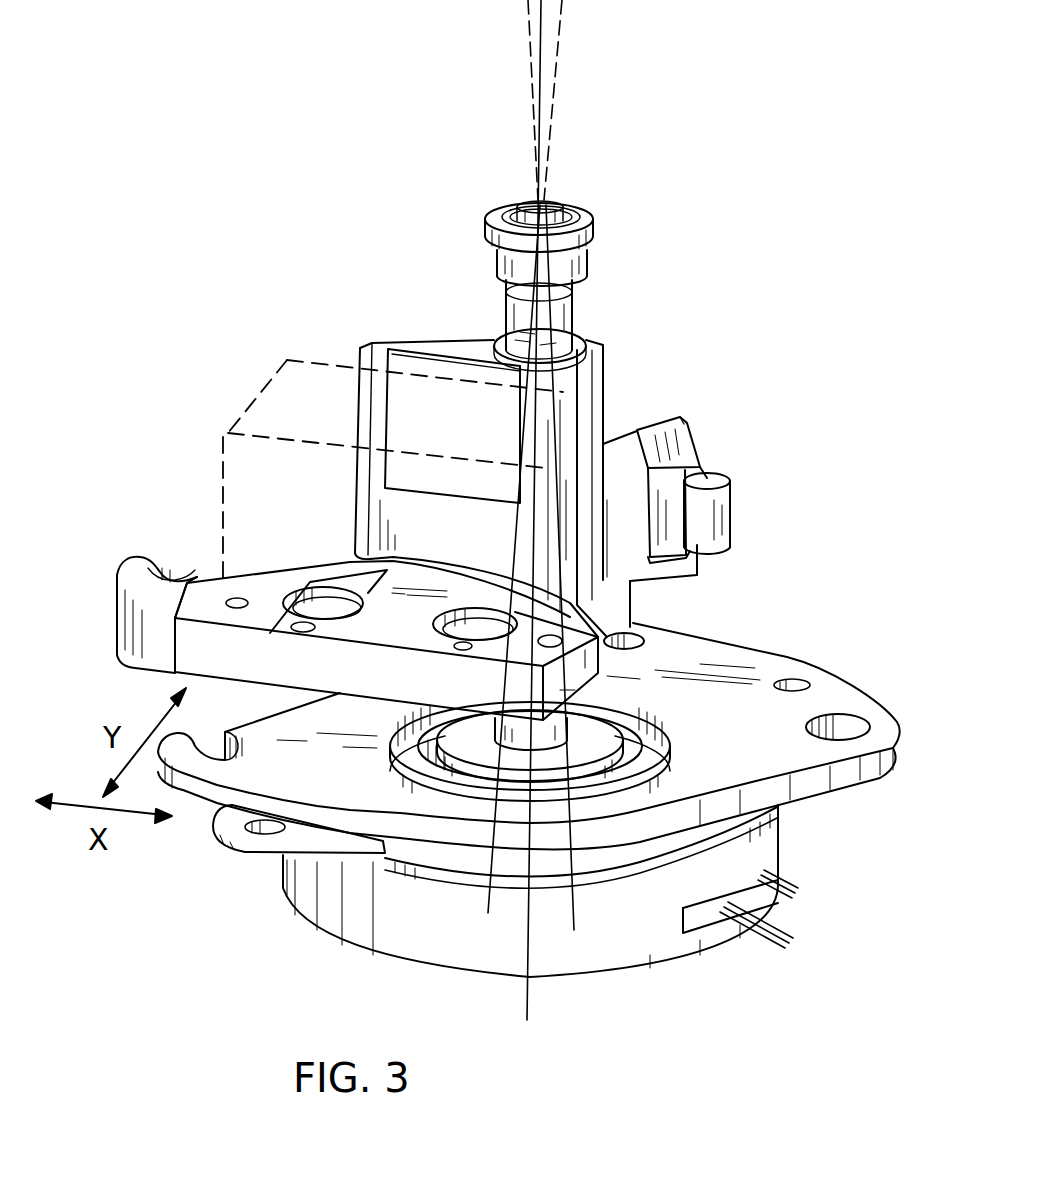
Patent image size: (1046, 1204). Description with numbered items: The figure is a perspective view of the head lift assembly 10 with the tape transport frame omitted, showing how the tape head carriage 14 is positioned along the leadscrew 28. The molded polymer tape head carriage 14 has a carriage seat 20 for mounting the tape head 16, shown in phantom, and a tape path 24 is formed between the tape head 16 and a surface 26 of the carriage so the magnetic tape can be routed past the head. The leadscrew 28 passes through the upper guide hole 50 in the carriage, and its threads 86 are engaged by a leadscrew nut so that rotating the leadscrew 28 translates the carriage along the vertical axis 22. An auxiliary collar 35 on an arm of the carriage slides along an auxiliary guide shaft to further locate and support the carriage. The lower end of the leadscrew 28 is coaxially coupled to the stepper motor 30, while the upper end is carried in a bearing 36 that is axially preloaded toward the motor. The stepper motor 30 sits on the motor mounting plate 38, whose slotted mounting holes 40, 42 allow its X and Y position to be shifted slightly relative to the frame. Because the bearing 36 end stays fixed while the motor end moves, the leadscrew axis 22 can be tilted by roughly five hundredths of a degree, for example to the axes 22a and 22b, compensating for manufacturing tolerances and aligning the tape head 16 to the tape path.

The head lift assembly 10 is at (212, 888).
The tape head carriage 14 is at (617, 478).
The tape head 16 is at (245, 405).
The carriage seat 20 is at (407, 627).
The vertical axis 22 is at (527, 1010).
The tilted axis 22a is at (488, 900).
The tilted axis 22b is at (574, 907).
The tape path 24 is at (390, 385).
The surface of the tape head carriage 26 is at (517, 382).
The leadscrew 28 is at (573, 298).
The stepper motor 30 is at (390, 918).
The auxiliary collar 35 is at (138, 607).
The bearing 36 is at (587, 216).
The motor mounting plate 38 is at (750, 662).
The slotted mounting hole 40 is at (633, 644).
The slotted mounting hole 42 is at (838, 727).
The upper guide hole 50 is at (572, 355).
The threads 86 is at (515, 308).